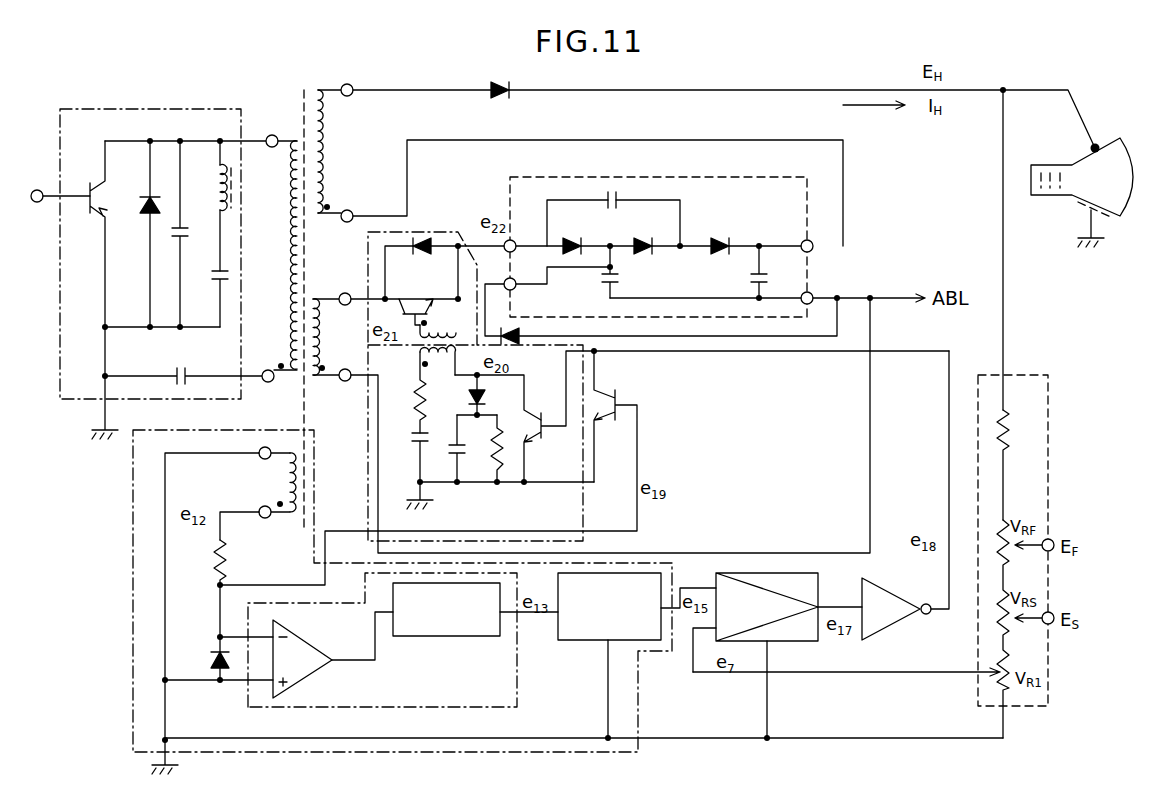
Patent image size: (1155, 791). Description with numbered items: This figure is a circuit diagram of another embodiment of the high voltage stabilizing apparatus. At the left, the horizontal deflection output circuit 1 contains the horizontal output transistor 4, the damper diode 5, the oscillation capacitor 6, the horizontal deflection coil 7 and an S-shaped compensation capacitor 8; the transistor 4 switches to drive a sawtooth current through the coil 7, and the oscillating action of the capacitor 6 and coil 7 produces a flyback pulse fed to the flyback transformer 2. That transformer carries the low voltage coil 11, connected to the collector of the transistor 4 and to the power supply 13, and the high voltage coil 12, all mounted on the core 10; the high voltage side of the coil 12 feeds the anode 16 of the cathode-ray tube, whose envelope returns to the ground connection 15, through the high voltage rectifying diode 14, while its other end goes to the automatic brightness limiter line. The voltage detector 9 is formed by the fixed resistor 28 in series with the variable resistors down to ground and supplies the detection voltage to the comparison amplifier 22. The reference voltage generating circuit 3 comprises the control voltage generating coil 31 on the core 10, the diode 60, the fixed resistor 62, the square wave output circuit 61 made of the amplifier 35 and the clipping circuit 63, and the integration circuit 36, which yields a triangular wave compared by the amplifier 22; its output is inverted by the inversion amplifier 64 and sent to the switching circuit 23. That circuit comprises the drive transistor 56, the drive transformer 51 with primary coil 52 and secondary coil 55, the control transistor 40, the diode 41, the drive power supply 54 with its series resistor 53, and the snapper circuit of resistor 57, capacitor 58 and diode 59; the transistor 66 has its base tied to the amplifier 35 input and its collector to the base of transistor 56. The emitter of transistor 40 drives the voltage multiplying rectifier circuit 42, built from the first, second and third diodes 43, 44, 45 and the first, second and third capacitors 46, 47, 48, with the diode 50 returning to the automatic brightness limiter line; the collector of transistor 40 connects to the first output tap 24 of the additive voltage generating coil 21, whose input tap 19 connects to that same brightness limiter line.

The horizontal deflection output circuit 1 is at (78, 105).
The flyback transformer 2 is at (322, 85).
The reference voltage generating circuit 3 is at (128, 720).
The horizontal output transistor 4 is at (102, 214).
The damper diode 5 is at (140, 200).
The oscillation capacitor 6 is at (170, 232).
The horizontal deflection coil 7 is at (216, 186).
The S-correction capacitor 8 is at (214, 276).
The voltage detector 9 is at (1050, 666).
The core 10 is at (308, 401).
The low voltage coil 11 is at (288, 258).
The high voltage coil 12 is at (328, 146).
The power supply 13 is at (190, 365).
The high voltage rectifying diode 14 is at (504, 100).
The CRT ground 15 is at (1126, 212).
The anode 16 is at (1096, 143).
The input tap 19 is at (345, 370).
The additive voltage generating coil 21 is at (326, 338).
The comparison amplifier 22 is at (784, 621).
The switching circuit 23 is at (585, 508).
The first output tap 24 is at (345, 292).
The fixed resistor 28 is at (1006, 430).
The control voltage generating coil 31 is at (282, 478).
The amplifier 35 is at (320, 670).
The integration circuit 36 is at (574, 640).
The control transistor 40 is at (426, 306).
The diode 41 is at (426, 238).
The voltage multiplying rectifier circuit 42 is at (725, 176).
The first diode 43 is at (576, 238).
The second diode 44 is at (646, 238).
The third diode 45 is at (722, 236).
The first capacitor 46 is at (620, 190).
The second capacitor 47 is at (622, 280).
The third capacitor 48 is at (748, 278).
The diode 50 is at (530, 332).
The drive transformer 51 is at (404, 350).
The primary coil 52 is at (446, 360).
The resistor 53 is at (412, 402).
The drive power supply 54 is at (412, 446).
The secondary coil 55 is at (458, 332).
The drive transistor 56 is at (530, 446).
The resistor 57 is at (498, 482).
The capacitor 58 is at (468, 456).
The diode 59 is at (488, 394).
The diode 60 is at (210, 657).
The square wave output circuit 61 is at (518, 702).
The fixed resistor 62 is at (228, 558).
The clipping circuit 63 is at (460, 636).
The inversion amplifier 64 is at (902, 624).
The transistor 66 is at (624, 396).